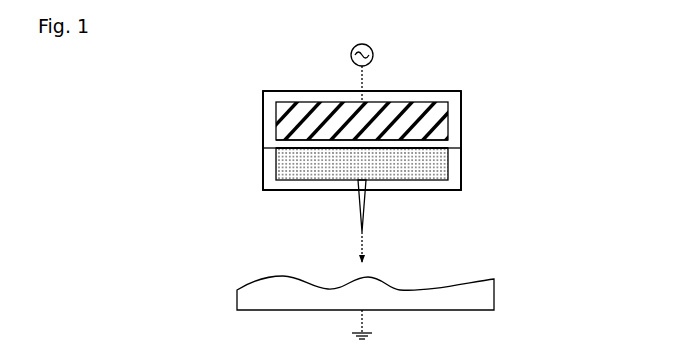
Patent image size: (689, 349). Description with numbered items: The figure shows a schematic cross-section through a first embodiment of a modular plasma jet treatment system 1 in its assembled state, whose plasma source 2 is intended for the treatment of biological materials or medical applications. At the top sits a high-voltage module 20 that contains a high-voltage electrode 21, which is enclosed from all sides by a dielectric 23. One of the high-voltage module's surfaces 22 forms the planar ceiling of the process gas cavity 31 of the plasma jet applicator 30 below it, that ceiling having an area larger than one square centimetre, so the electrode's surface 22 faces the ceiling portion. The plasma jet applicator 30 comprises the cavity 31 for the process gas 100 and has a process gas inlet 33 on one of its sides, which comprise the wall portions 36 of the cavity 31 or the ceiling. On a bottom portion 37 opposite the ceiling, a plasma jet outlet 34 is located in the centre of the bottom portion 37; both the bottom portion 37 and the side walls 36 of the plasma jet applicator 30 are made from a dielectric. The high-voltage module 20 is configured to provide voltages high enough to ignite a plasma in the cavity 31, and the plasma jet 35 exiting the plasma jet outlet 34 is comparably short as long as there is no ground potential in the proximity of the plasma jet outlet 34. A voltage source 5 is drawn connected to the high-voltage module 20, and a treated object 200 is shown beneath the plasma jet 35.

The system 1 is at (542, 83).
The plasma source 2 is at (362, 140).
The voltage source 5 is at (368, 48).
The high-voltage module 20 is at (252, 112).
The high-voltage electrode 21 is at (332, 112).
The surface of high-voltage module 22 is at (332, 148).
The dielectric 23 is at (276, 128).
The plasma jet applicator 30 is at (242, 168).
The process gas cavity 31 is at (400, 160).
The process gas inlet 33 is at (453, 163).
The plasma jet outlet 34 is at (363, 190).
The plasma jet 35 is at (364, 205).
The wall portions 36 is at (265, 170).
The bottom portion 37 is at (423, 186).
The process gas 100 is at (473, 163).
The substrate / treated object 200 is at (477, 300).